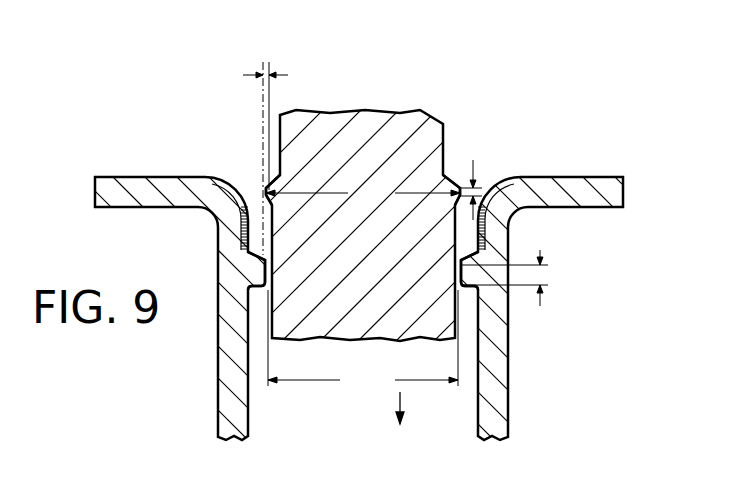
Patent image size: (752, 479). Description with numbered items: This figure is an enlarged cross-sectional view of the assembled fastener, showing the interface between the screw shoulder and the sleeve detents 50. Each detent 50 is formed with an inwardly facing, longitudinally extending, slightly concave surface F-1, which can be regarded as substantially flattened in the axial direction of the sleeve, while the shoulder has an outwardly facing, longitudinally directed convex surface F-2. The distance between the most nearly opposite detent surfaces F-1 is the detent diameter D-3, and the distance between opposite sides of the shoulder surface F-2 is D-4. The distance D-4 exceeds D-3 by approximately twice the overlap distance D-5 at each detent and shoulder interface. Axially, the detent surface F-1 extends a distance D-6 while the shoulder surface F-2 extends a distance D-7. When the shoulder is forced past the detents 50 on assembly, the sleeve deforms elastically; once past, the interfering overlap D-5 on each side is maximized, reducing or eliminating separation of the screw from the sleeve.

The detent 50 is at (262, 270).
The detent surface F-1 is at (458, 282).
The shoulder surface F-2 is at (260, 188).
The detent diameter D-3 is at (363, 341).
The shoulder diameter D-4 is at (363, 196).
The overlap distance D-5 is at (288, 158).
The detent surface axial extent D-6 is at (511, 292).
The shoulder surface axial extent D-7 is at (475, 176).